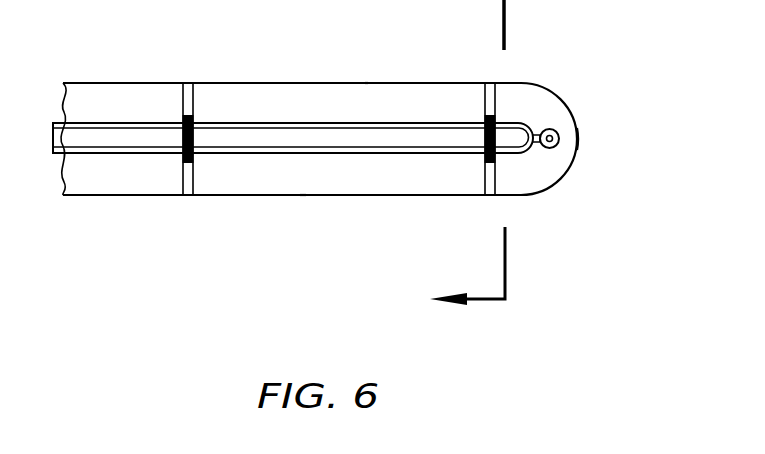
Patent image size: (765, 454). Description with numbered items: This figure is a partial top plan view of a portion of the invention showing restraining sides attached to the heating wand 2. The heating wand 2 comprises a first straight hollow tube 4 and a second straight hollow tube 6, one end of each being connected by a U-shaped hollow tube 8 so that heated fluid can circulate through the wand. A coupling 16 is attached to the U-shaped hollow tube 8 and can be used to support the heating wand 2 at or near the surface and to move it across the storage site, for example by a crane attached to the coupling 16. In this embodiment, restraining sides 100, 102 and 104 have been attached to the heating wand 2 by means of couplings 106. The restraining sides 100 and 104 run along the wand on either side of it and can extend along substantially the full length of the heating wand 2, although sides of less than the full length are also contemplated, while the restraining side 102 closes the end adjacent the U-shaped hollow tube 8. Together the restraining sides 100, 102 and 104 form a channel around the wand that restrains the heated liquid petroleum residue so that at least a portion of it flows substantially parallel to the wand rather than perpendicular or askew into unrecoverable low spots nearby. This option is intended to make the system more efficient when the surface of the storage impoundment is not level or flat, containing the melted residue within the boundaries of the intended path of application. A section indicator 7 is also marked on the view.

The heating wand 2 is at (375, 112).
The first straight hollow tube 4 is at (152, 157).
The second straight hollow tube 6 is at (100, 123).
The section line 7- 7 is at (455, 156).
The U-shaped hollow tube 8 is at (533, 147).
The coupling 16 is at (554, 128).
The restraining side 100 is at (360, 83).
The restraining side 102 is at (578, 133).
The restraining side 104 is at (304, 195).
The couplings 106 is at (192, 113).